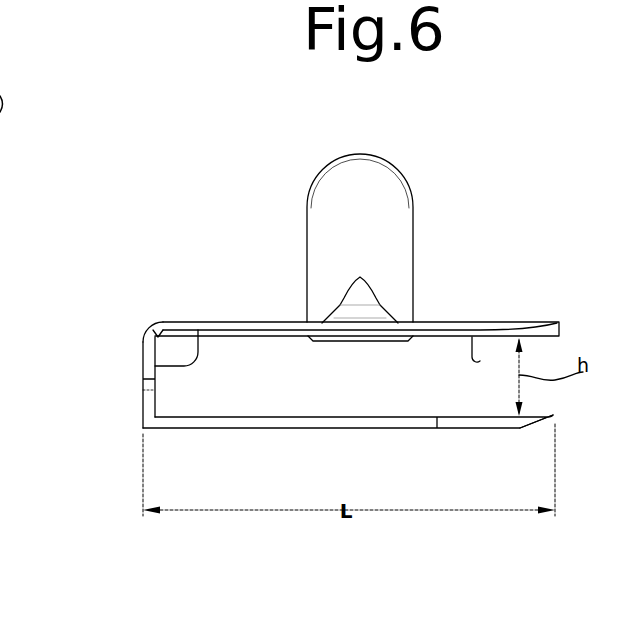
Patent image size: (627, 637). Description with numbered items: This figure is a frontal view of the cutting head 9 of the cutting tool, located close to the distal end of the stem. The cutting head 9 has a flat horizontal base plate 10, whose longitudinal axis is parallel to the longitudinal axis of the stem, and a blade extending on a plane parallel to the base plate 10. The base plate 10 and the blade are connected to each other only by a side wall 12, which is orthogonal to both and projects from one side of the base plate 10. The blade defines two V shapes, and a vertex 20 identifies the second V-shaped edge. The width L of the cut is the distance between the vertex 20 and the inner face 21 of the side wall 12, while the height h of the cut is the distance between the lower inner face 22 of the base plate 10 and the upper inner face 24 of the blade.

The cutting head 9 is at (319, 328).
The base plate 10 is at (453, 322).
The side wall 12 is at (143, 361).
The vertex 20 is at (553, 416).
The inner face 21 is at (198, 340).
The lower inner face 22 is at (476, 361).
The upper inner face 24 is at (248, 417).